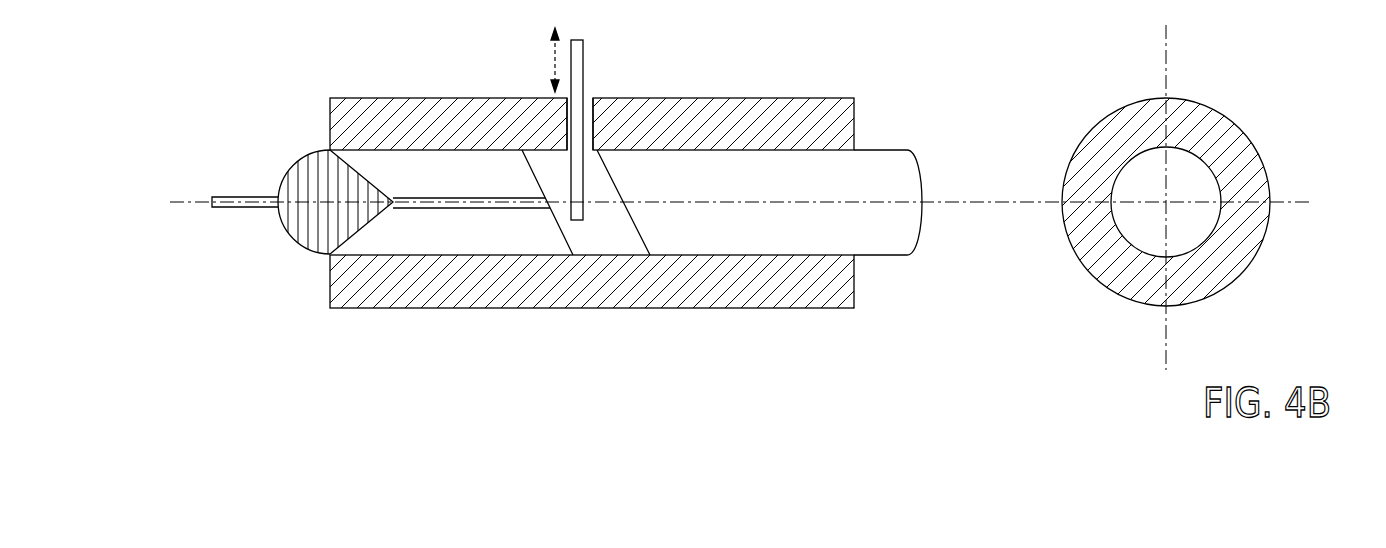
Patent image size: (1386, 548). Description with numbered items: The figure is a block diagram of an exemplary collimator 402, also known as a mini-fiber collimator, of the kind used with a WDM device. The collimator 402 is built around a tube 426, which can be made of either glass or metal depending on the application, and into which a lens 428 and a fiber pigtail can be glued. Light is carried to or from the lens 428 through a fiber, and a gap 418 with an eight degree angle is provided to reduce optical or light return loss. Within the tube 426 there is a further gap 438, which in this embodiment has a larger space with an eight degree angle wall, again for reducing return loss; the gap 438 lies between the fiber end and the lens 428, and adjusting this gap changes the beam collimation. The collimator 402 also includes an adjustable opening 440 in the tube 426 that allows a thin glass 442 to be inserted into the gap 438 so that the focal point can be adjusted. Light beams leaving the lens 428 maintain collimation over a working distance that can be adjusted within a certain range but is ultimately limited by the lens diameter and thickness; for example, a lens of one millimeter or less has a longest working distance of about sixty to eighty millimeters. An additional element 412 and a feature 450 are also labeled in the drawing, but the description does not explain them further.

The collimator 402 is at (272, 46).
The optical fiber 412 is at (490, 244).
The gap 418 is at (260, 196).
The tube 426 is at (810, 137).
The lens 428 is at (815, 242).
The gap 438 is at (625, 244).
The adjustable opening 440 is at (596, 84).
The thin glass 442 is at (578, 40).
The direction of movement arrow 450 is at (550, 62).